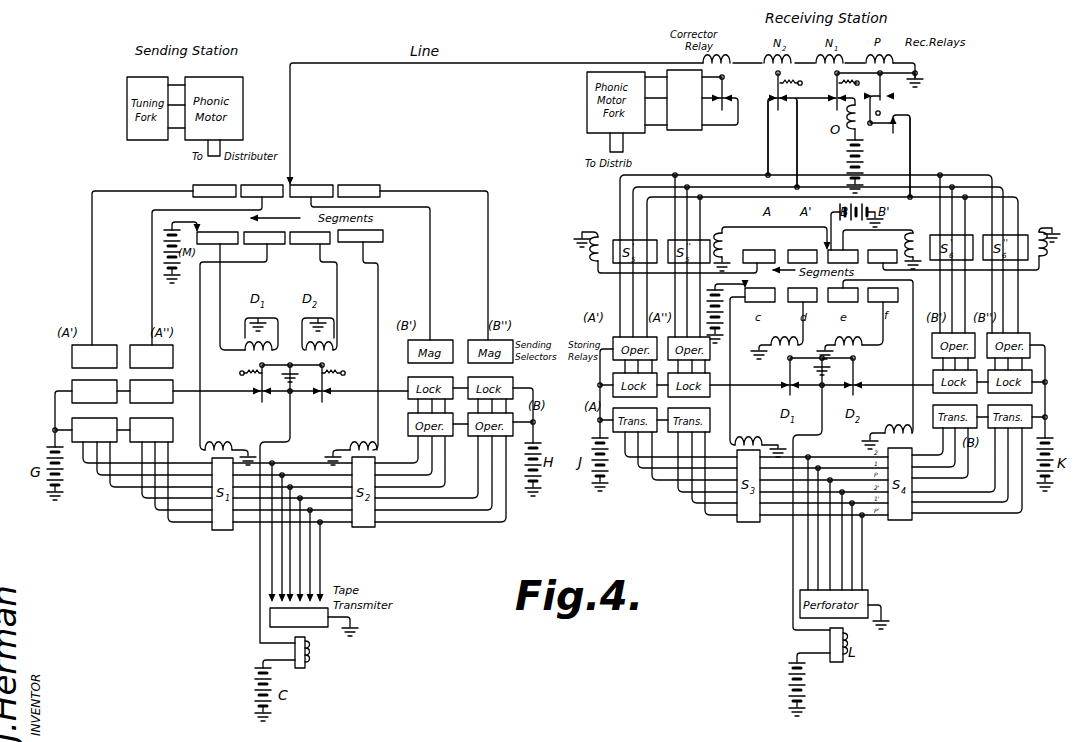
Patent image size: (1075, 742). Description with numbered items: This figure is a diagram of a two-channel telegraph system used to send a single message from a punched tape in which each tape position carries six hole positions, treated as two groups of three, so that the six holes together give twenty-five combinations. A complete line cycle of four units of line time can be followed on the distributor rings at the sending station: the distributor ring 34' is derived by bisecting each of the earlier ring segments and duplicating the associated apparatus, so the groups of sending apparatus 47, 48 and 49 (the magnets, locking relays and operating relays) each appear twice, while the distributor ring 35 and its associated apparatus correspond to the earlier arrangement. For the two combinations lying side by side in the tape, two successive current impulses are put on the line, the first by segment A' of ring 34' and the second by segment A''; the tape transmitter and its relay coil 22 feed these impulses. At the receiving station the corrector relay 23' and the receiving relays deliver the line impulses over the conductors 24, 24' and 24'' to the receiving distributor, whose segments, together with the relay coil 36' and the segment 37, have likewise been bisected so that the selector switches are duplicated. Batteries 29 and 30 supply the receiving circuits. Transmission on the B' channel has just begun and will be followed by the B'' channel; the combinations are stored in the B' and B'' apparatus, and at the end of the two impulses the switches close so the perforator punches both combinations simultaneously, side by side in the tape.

The tape transmitter relay coil 22 is at (341, 656).
The corrector relay 23' is at (702, 110).
The receiving relay conductor 24 is at (920, 157).
The receiving relay conductor 24' is at (788, 144).
The receiving relay conductor 24'' is at (753, 138).
The battery 29 is at (863, 225).
The battery 30 is at (723, 308).
The distributor ring 34' is at (302, 179).
The distributor ring 35 is at (384, 233).
The relay coil 36' is at (772, 238).
The distributor segment 37 is at (898, 290).
The sending apparatus rectangle 47 is at (106, 340).
The sending apparatus rectangle 48 is at (72, 383).
The sending apparatus rectangle 49 is at (72, 421).